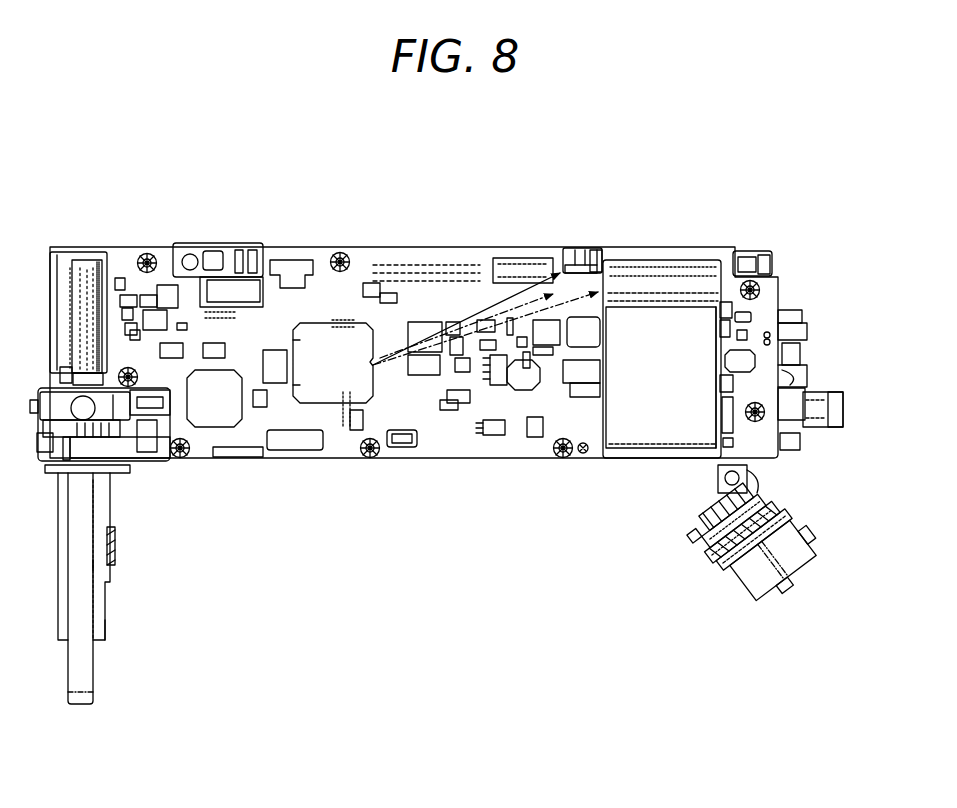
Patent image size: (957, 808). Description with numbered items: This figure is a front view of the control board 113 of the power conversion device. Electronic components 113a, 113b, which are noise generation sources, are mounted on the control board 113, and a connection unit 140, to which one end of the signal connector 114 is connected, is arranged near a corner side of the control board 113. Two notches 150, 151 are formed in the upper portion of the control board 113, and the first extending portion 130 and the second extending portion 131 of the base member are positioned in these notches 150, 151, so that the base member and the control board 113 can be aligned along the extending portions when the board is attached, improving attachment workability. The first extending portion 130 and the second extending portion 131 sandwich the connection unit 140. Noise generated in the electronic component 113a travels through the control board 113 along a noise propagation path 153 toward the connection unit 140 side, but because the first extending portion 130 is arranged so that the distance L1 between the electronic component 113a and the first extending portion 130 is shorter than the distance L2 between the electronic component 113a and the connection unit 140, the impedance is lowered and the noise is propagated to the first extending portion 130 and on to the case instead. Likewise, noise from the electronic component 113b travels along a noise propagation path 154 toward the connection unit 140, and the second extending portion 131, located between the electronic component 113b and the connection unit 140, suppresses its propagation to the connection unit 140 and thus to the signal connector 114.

The control board 113 is at (243, 427).
The electronic component 113a is at (340, 392).
The electronic component 113b is at (803, 433).
The signal connector 114 is at (755, 578).
The first extending portion 130 is at (573, 247).
The second extending portion 131 is at (752, 250).
The connection unit 140 is at (667, 258).
The notch 150 is at (598, 247).
The notch 151 is at (770, 250).
The noise propagation path 153 is at (455, 336).
The noise propagation path 154 is at (748, 318).
The distance L1 is at (497, 303).
The distance L2 is at (577, 300).